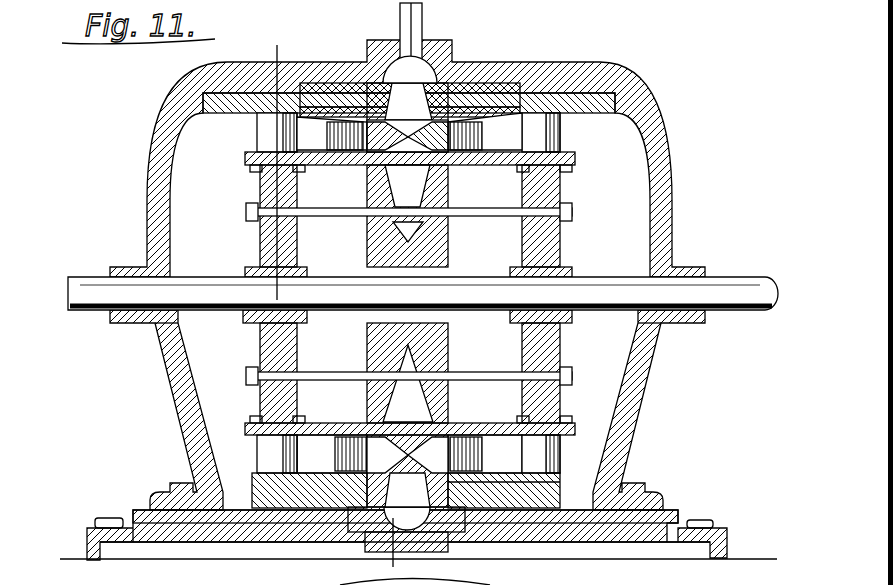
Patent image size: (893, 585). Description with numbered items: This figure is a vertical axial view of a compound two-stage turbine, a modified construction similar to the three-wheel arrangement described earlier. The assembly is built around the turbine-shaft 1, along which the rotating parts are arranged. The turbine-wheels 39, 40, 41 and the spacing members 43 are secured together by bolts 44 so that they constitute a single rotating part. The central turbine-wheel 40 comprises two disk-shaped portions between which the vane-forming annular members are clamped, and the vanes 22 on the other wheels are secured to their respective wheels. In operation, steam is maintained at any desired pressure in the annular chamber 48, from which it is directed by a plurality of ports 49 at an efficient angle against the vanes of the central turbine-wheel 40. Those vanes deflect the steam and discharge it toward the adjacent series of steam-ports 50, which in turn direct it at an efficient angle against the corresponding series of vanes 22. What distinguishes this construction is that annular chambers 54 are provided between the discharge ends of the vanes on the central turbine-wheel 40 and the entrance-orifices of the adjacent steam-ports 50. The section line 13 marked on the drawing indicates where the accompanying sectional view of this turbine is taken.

The turbine-shaft 1 is at (734, 286).
The section line 13 13 is at (393, 567).
The vanes 22 is at (270, 133).
The turbine-wheel 39 is at (282, 342).
The central turbine-wheel 40 is at (425, 345).
The turbine-wheel 41 is at (542, 345).
The spacing members 43 is at (335, 165).
The bolts 44 is at (246, 211).
The annular chamber 48 is at (408, 70).
The ports 49 is at (417, 97).
The steam-ports 50 is at (503, 133).
The annular chambers 54 is at (362, 152).